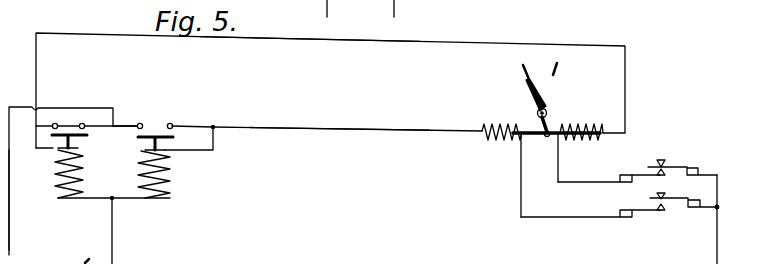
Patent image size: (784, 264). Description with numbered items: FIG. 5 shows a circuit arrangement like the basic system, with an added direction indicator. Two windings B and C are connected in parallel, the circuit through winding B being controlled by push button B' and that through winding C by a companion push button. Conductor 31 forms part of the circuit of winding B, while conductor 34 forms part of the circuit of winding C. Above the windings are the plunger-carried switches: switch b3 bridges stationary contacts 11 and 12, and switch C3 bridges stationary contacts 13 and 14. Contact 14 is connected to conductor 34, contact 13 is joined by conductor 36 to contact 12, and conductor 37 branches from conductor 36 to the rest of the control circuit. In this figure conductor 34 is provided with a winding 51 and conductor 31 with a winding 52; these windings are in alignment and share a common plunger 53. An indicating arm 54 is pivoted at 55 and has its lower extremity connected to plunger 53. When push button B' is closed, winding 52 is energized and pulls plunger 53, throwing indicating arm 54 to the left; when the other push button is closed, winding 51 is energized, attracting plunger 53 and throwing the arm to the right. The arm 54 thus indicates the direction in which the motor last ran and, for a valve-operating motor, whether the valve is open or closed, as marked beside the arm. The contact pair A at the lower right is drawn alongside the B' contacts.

The stationary contact 11 is at (55, 118).
The stationary contact 12 is at (85, 118).
The stationary contact 13 is at (139, 117).
The stationary contact 14 is at (175, 117).
The conductor 31 is at (318, 43).
The conductor 34 is at (343, 131).
The conductor 36 is at (129, 128).
The conductor 37 is at (9, 197).
The winding 51 is at (511, 127).
The winding 52 is at (576, 128).
The common plunger 53 is at (548, 138).
The indicating arm 54 is at (537, 96).
The pivot 55 is at (552, 107).
The winding B is at (51, 184).
The winding C is at (171, 177).
The switch b3 is at (87, 137).
The switch C3 is at (174, 138).
The push button B' is at (637, 162).
The relay contacts A is at (619, 215).